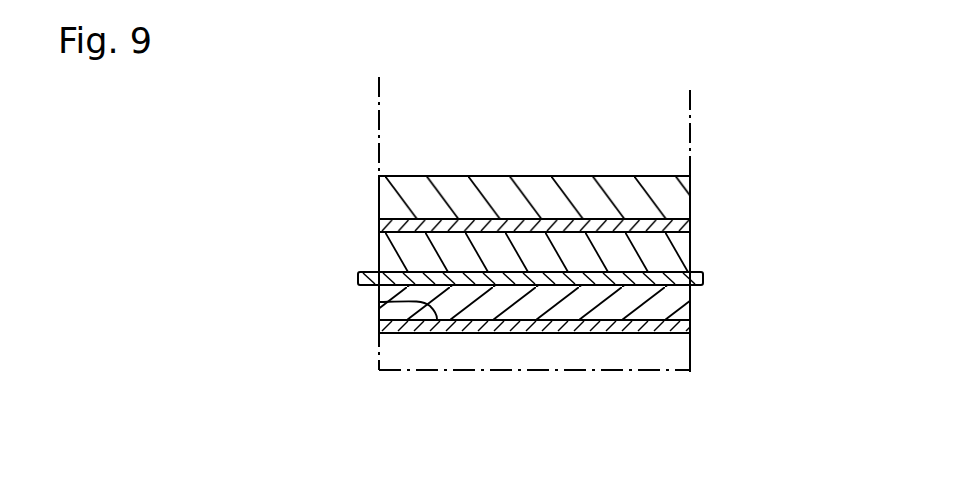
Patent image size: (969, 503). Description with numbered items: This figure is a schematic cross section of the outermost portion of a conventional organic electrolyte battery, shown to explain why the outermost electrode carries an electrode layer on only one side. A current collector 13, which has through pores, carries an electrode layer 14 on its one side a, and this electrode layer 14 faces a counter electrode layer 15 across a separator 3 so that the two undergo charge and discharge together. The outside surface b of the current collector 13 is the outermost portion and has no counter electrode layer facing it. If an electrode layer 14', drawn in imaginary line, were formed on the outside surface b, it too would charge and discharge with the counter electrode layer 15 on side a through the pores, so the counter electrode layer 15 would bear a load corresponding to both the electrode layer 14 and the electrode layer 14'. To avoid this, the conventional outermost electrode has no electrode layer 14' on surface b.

The separator 3 is at (358, 273).
The current collector 13 is at (663, 328).
The electrode layer 14 is at (591, 299).
The electrode layer 14' is at (534, 402).
The counter electrode layer 15 is at (661, 252).
The one side of the current collector a is at (380, 302).
The outside surface of the current collector b is at (483, 333).